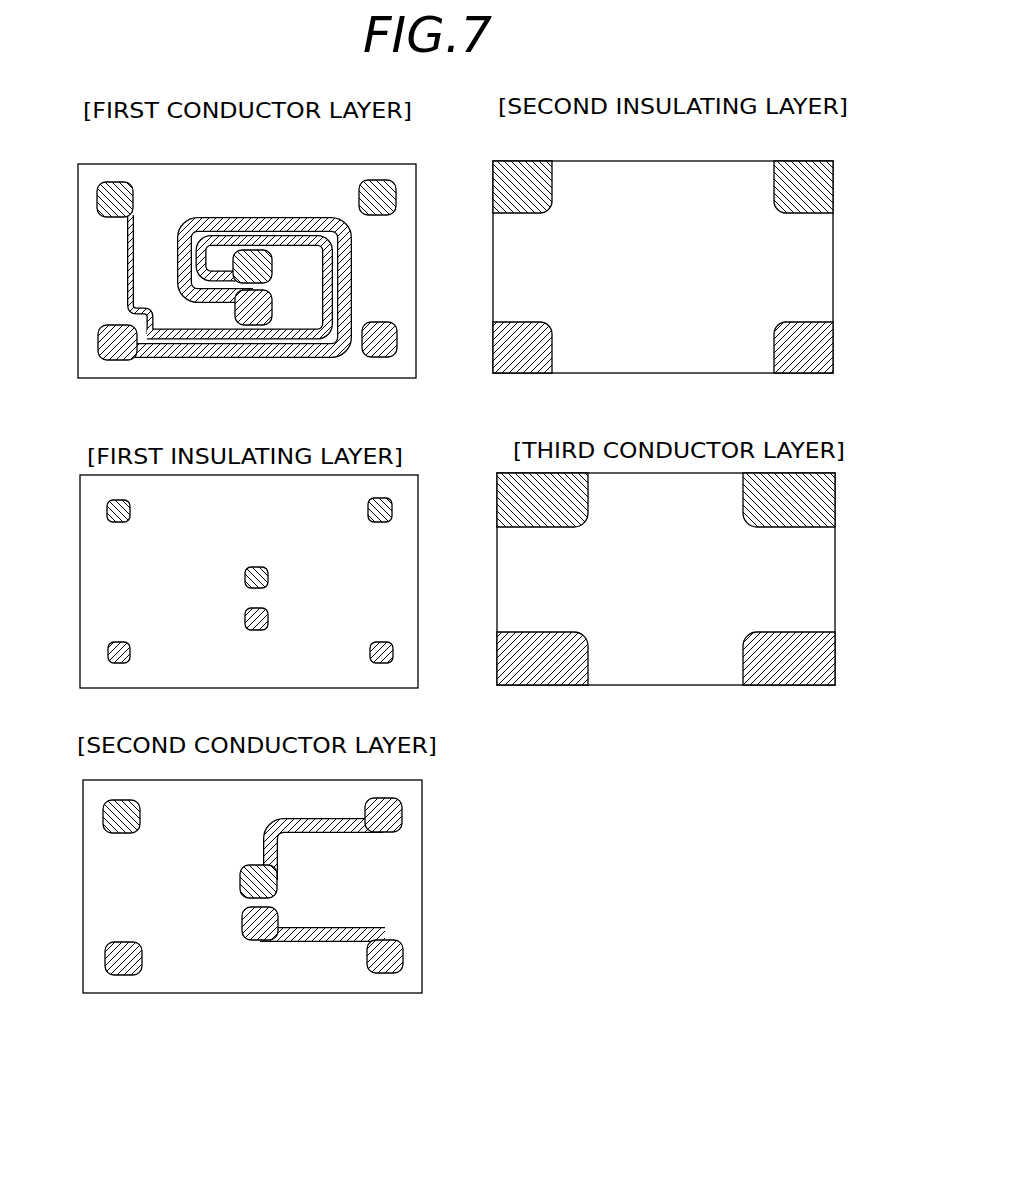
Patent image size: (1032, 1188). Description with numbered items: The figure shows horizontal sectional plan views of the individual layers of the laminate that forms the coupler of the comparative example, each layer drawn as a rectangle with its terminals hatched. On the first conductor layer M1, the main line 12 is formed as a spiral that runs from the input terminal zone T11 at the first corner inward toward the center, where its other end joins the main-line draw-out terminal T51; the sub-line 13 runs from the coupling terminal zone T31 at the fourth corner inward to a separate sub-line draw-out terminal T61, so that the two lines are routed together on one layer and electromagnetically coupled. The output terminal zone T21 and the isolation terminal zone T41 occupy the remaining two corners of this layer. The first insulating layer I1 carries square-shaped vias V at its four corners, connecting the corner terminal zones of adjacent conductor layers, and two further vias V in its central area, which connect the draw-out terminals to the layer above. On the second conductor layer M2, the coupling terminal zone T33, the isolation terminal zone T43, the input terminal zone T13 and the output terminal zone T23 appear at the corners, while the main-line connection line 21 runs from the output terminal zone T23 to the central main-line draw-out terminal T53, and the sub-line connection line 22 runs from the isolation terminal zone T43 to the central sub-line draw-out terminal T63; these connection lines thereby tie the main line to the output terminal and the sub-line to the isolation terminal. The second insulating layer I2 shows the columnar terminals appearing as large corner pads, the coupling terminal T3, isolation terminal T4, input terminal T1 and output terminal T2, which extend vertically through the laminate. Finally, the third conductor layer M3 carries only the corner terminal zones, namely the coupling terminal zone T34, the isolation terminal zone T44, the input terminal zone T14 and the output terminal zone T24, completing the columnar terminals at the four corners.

The first conductor layer M1 is at (422, 248).
The main line 12 is at (195, 358).
The sub-line 13 is at (193, 330).
The coupling terminal zone T31 is at (113, 182).
The isolation terminal zone T41 is at (378, 181).
The input terminal zone T11 is at (110, 359).
The output terminal zone T21 is at (380, 357).
The sub-line draw-out terminal T61 is at (254, 251).
The main-line draw-out terminal T51 is at (257, 325).
The second insulating layer I2 is at (485, 272).
The coupling terminal T3 is at (517, 172).
The isolation terminal T4 is at (800, 170).
The input terminal T1 is at (519, 368).
The output terminal T2 is at (808, 367).
The first insulating layer I1 is at (430, 575).
The via V is at (107, 504).
The third conductor layer M3 is at (488, 605).
The coupling terminal zone T34 is at (497, 481).
The isolation terminal zone T44 is at (826, 500).
The input terminal zone T14 is at (533, 679).
The output terminal zone T24 is at (794, 679).
The second conductor layer M2 is at (72, 910).
The sub-line connection line 22 is at (318, 834).
The main-line connection line 21 is at (320, 927).
The coupling terminal zone T33 is at (108, 802).
The isolation terminal zone T43 is at (402, 806).
The input terminal zone T13 is at (120, 976).
The output terminal zone T23 is at (387, 974).
The sub-line draw-out terminal T63 is at (240, 882).
The main-line draw-out terminal T53 is at (260, 941).